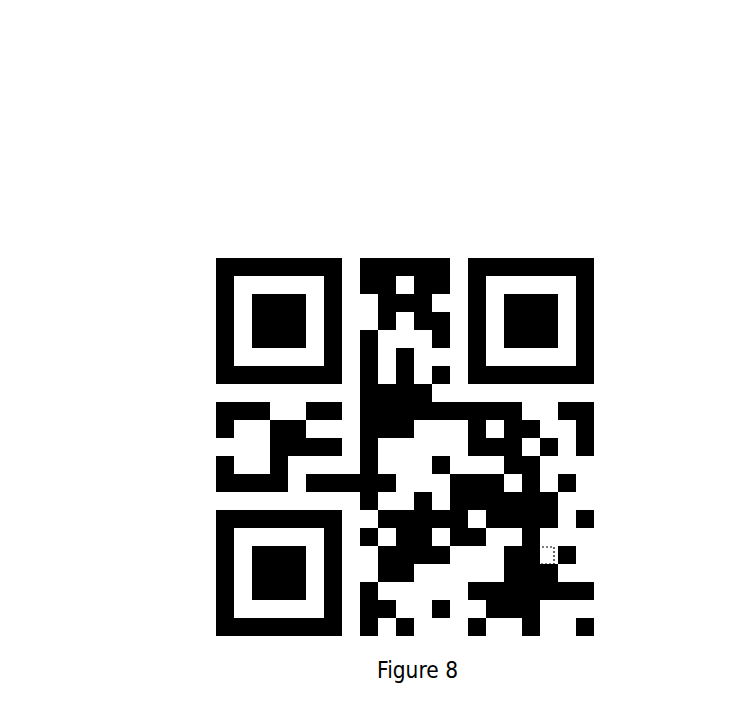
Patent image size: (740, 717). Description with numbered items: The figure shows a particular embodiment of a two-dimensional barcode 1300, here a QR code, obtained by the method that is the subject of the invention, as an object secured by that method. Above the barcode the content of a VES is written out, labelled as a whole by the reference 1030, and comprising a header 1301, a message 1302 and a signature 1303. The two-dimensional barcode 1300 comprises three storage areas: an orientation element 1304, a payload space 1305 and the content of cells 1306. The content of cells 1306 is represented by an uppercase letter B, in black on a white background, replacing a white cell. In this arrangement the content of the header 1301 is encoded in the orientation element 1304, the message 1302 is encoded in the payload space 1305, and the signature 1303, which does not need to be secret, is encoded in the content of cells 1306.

The signature message header 1030 is at (385, 255).
The 2D barcode 1300 is at (361, 428).
The header 1301 is at (113, 333).
The message 1302 is at (428, 212).
The signature 1303 is at (659, 498).
The orientation element 1304 is at (217, 308).
The payload space 1305 is at (427, 258).
The content of cells 1306 is at (544, 557).